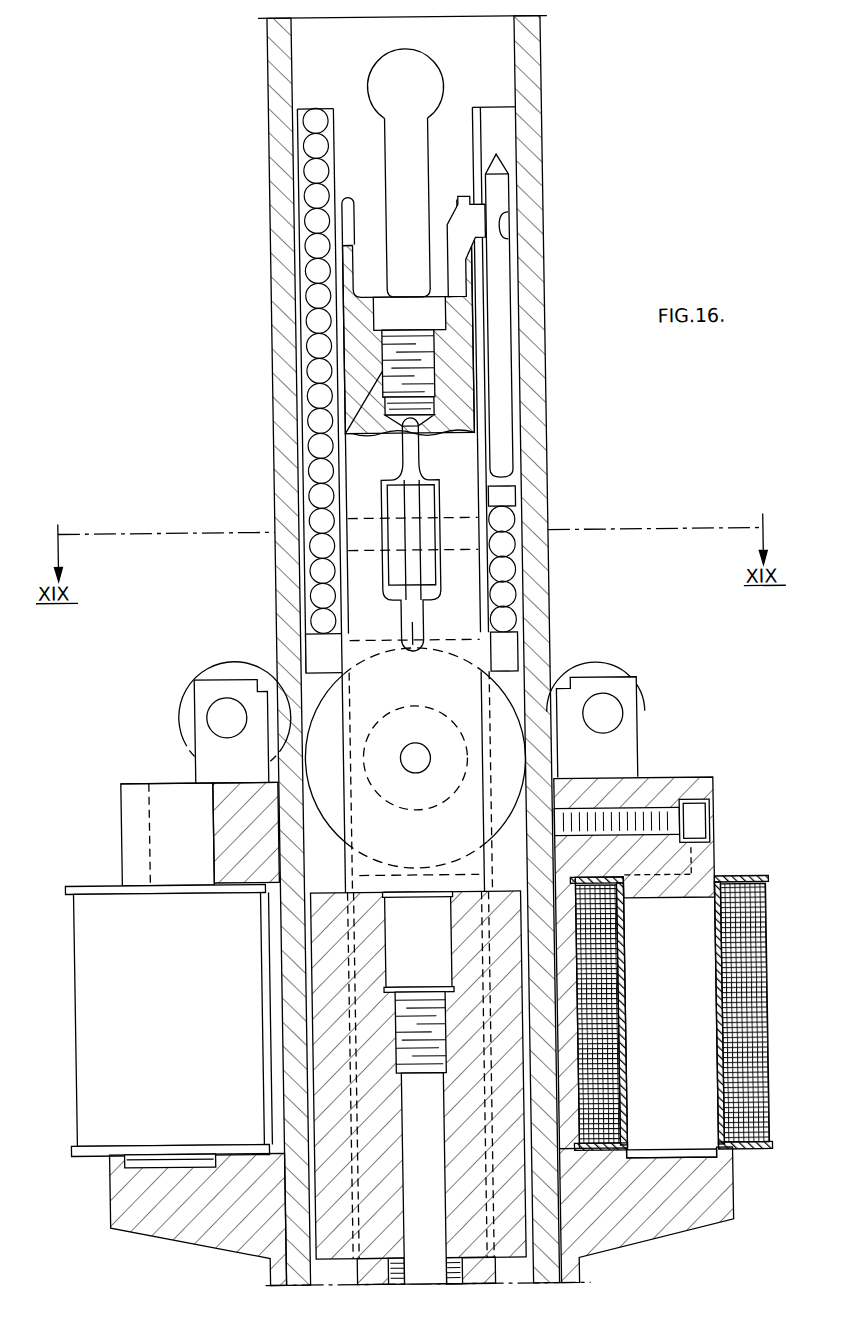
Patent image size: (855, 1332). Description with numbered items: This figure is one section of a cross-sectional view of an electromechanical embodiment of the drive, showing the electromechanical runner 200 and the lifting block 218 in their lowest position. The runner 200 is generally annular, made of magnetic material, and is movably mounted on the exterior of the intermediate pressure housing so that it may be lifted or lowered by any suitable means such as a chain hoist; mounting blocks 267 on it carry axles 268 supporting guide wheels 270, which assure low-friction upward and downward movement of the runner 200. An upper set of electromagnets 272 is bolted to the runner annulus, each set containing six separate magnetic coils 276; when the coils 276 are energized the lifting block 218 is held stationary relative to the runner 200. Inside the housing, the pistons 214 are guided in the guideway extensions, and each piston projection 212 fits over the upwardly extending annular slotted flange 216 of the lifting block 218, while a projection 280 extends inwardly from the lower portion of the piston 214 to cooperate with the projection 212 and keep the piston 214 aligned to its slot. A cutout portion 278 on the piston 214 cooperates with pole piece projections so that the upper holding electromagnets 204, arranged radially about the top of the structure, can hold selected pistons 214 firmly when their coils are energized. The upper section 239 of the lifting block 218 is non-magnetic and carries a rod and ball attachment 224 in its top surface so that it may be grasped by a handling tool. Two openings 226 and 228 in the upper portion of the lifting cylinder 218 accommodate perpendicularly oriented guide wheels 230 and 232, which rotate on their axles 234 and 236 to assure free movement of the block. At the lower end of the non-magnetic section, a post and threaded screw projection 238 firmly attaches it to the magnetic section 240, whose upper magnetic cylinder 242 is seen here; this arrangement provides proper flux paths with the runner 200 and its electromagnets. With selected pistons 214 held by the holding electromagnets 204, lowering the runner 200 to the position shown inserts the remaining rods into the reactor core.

The electromechanical runner 200 is at (185, 1241).
The upper holding electromagnets 204 is at (68, 1008).
The piston projection 212 is at (461, 269).
The piston 214 is at (503, 410).
The annular slotted flange 216 is at (354, 205).
The lifting block 218 is at (464, 372).
The rod and ball attachment 224 is at (430, 167).
The opening 226 is at (431, 475).
The opening 228 is at (490, 708).
The guide wheel 230 is at (413, 649).
The guide wheel 232 is at (494, 804).
The axle 234 is at (464, 543).
The axle 236 is at (419, 770).
The post and threaded screw projection 238 is at (409, 998).
The upper section 239 is at (347, 461).
The magnetic section 240 is at (429, 1227).
The upper magnetic cylinder 242 is at (450, 1113).
The mounting block 267 is at (202, 771).
The axle 268 is at (208, 708).
The guide wheel 270 is at (604, 670).
The upper set of electromagnets 272 is at (762, 979).
The magnetic coil 276 is at (604, 977).
The cutout portion 278 is at (514, 228).
The projection 280 is at (487, 457).